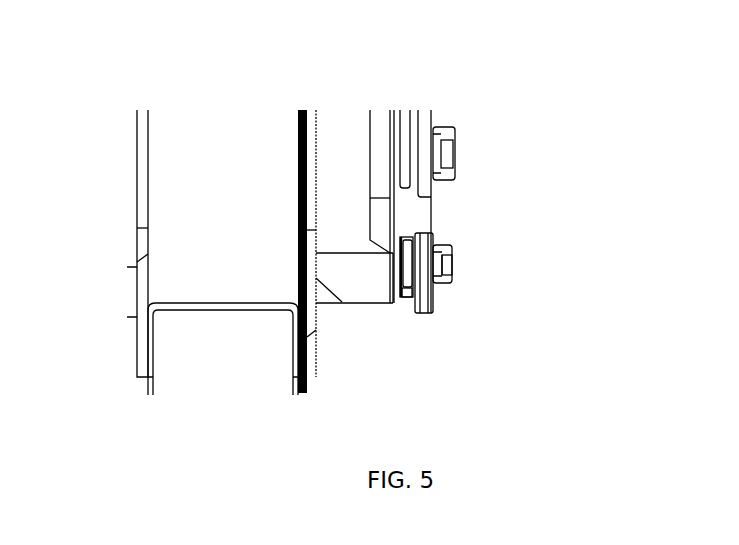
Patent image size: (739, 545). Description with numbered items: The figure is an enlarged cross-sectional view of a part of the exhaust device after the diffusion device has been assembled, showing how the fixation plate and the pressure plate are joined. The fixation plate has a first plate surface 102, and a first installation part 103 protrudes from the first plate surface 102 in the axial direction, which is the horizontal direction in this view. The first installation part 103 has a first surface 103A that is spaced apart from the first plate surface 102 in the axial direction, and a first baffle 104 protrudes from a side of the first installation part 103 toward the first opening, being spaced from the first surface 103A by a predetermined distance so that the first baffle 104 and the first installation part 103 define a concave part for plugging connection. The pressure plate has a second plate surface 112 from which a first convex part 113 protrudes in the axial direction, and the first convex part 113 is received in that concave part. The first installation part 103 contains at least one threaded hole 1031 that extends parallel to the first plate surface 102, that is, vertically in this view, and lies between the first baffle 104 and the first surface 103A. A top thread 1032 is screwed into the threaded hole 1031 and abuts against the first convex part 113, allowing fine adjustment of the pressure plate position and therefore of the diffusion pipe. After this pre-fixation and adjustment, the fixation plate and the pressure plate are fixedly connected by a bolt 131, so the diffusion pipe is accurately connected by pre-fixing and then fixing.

The first plate surface 102 is at (313, 122).
The first installation part 103 is at (363, 290).
The threaded hole 1031 is at (407, 305).
The top thread 1032 is at (425, 308).
The first surface 103A is at (413, 287).
The first baffle 104 is at (377, 215).
The second plate surface 112 is at (418, 207).
The first convex part 113 is at (400, 201).
The bolt 131 is at (455, 270).